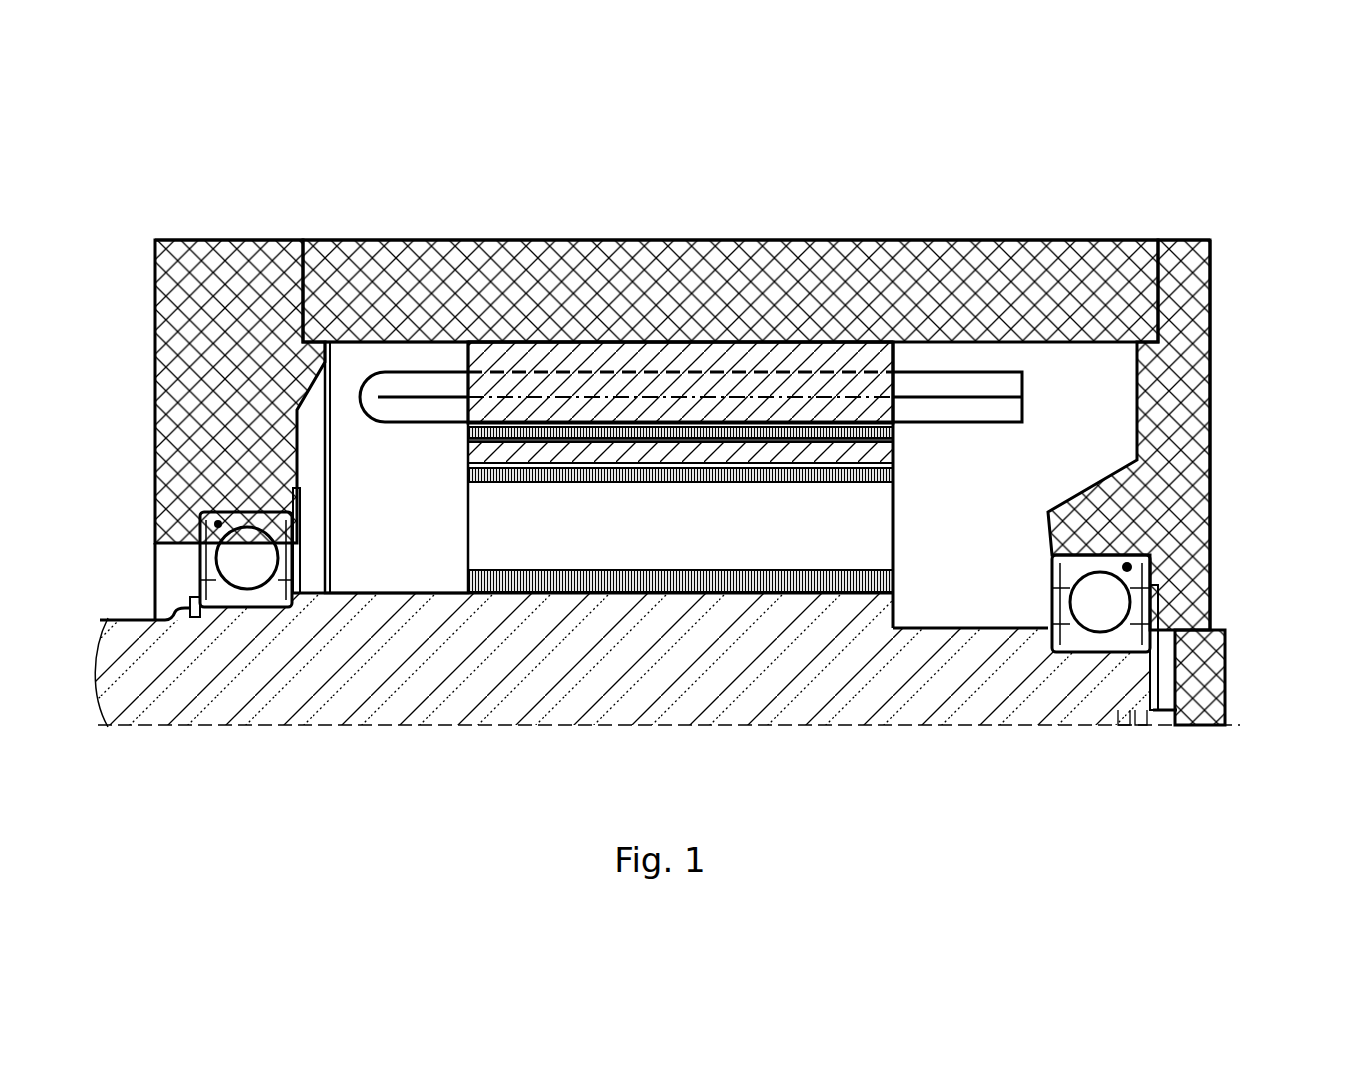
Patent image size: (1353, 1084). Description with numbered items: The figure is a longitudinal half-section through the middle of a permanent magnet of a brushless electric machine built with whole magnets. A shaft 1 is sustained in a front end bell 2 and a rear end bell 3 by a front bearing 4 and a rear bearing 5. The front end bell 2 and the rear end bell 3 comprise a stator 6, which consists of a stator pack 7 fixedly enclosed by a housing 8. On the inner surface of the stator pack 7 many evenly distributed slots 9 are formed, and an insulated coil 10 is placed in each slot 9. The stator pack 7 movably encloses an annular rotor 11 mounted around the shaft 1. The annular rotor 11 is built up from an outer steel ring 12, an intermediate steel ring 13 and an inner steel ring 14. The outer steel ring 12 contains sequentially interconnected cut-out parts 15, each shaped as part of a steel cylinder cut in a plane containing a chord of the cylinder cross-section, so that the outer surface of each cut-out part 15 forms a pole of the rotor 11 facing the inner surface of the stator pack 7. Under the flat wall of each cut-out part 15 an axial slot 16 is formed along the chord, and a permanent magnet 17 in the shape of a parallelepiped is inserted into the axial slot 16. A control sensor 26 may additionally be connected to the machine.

The shaft 1 is at (325, 655).
The front end bell 2 is at (228, 303).
The rear end bell 3 is at (1183, 268).
The front bearing 4 is at (155, 470).
The rear bearing 5 is at (1212, 488).
The stator 6 is at (762, 232).
The stator pack 7 is at (510, 357).
The housing 8 is at (633, 293).
The slot 9 is at (831, 355).
The insulated coil 10 is at (378, 397).
The annular rotor 11 is at (918, 462).
The outer steel ring 12 is at (609, 452).
The intermediate steel ring 13 is at (644, 505).
The inner steel ring 14 is at (815, 580).
The cut-out part 15 is at (855, 435).
The axial slot 16 is at (458, 461).
The permanent magnet 17 is at (704, 453).
The control sensor 26 is at (1205, 655).